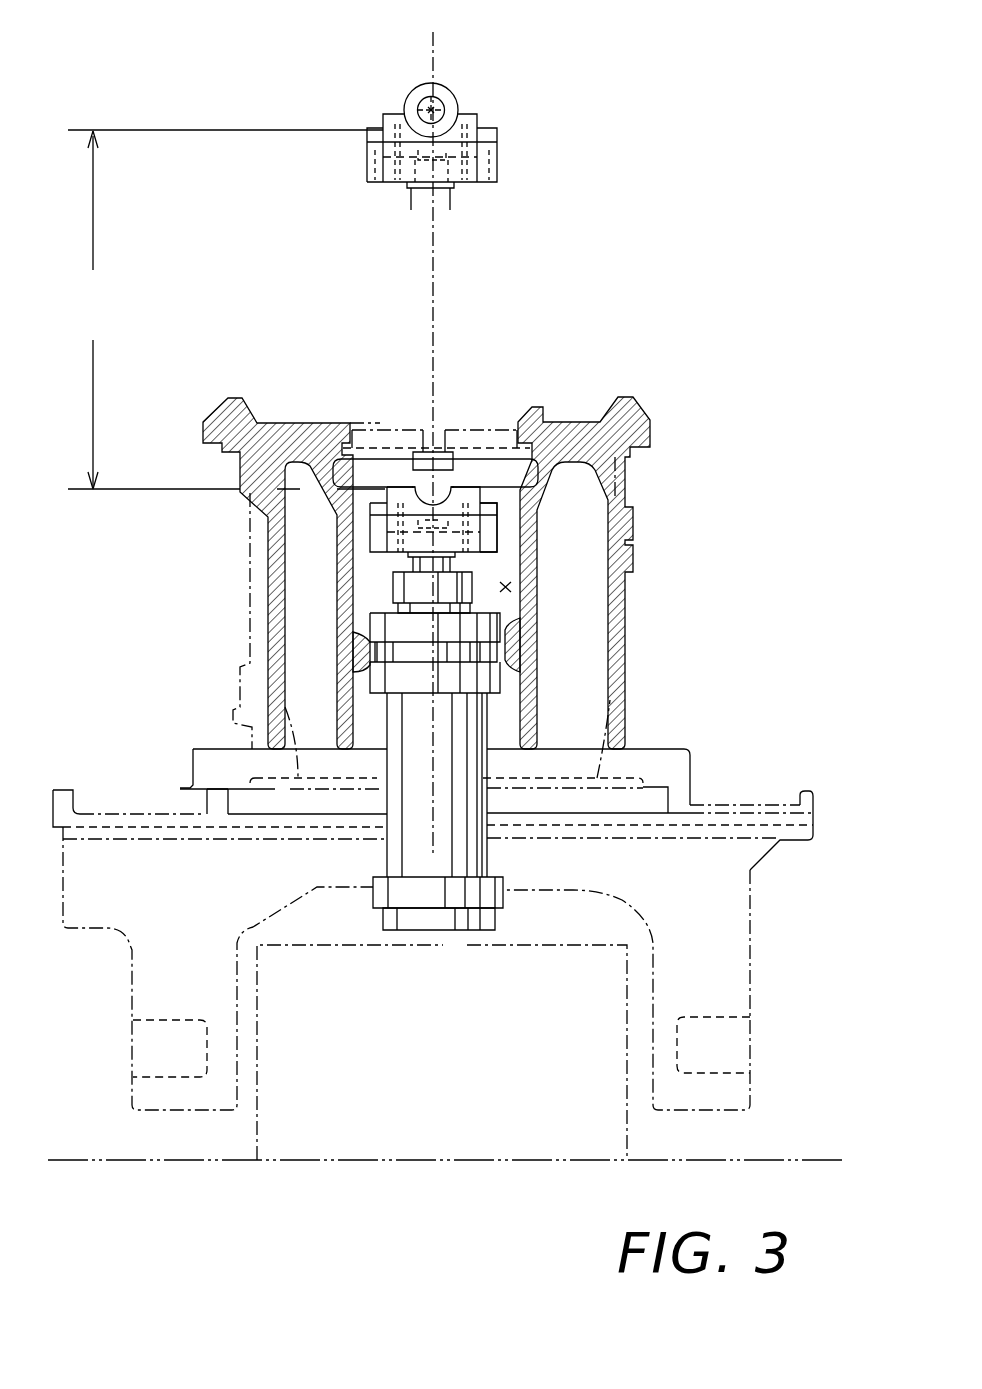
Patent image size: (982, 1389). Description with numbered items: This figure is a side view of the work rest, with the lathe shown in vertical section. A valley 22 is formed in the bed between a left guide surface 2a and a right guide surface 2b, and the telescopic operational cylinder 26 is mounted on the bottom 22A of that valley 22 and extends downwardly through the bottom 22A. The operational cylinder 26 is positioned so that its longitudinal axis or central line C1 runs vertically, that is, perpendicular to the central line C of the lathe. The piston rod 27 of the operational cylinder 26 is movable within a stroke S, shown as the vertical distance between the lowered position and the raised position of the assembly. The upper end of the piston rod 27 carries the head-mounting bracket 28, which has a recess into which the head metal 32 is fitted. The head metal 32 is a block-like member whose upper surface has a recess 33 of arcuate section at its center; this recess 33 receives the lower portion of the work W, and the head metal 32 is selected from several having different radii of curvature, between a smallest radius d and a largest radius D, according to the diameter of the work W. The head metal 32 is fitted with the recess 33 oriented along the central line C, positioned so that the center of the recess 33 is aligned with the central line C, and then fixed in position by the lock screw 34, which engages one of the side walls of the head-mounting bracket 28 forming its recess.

The left guide surface 2a is at (303, 423).
The right guide surface 2b is at (548, 418).
The valley 22 is at (512, 588).
The bottom of the valley 22A is at (503, 628).
The telescopic operational cylinder 26 is at (457, 945).
The piston rod 27 is at (452, 565).
The head-mounting bracket 28 is at (378, 545).
The head metal 32 is at (475, 490).
The recess 33 is at (421, 487).
The lock screw 34 is at (531, 483).
The central line C is at (445, 122).
The central line of the operational cylinder C1 is at (435, 276).
The largest radius D is at (420, 81).
The smallest radius d is at (415, 101).
The work W is at (436, 108).
The stroke S is at (226, 309).